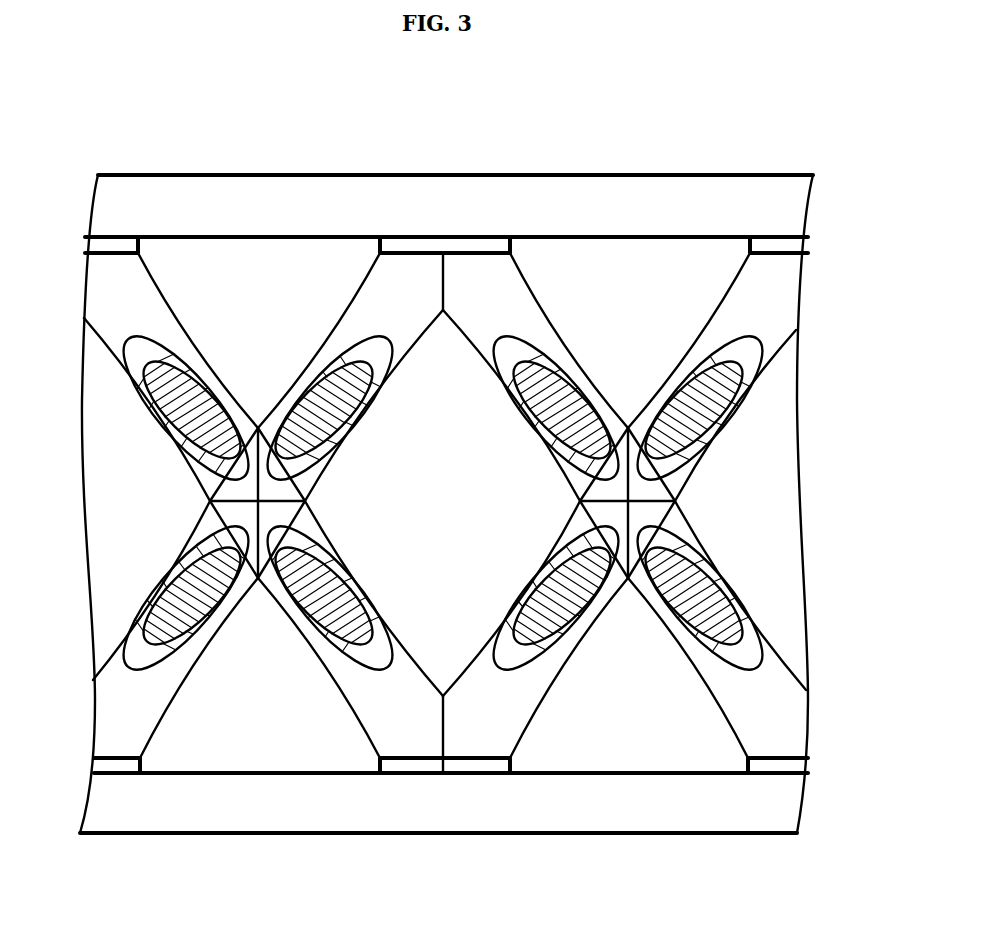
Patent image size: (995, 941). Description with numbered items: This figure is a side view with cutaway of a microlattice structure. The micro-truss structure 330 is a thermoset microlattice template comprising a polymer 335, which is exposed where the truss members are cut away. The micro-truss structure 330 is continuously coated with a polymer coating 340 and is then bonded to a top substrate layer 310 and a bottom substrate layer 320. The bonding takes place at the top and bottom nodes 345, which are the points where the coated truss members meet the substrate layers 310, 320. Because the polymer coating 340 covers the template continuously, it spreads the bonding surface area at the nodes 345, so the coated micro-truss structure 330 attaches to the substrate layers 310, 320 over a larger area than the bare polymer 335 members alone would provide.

The substrate layer 310 is at (643, 226).
The substrate layer 320 is at (248, 812).
The micro-truss structure 330 is at (420, 726).
The polymer 335 is at (707, 421).
The polymer coating 340 is at (757, 342).
The nodes 345 is at (453, 243).